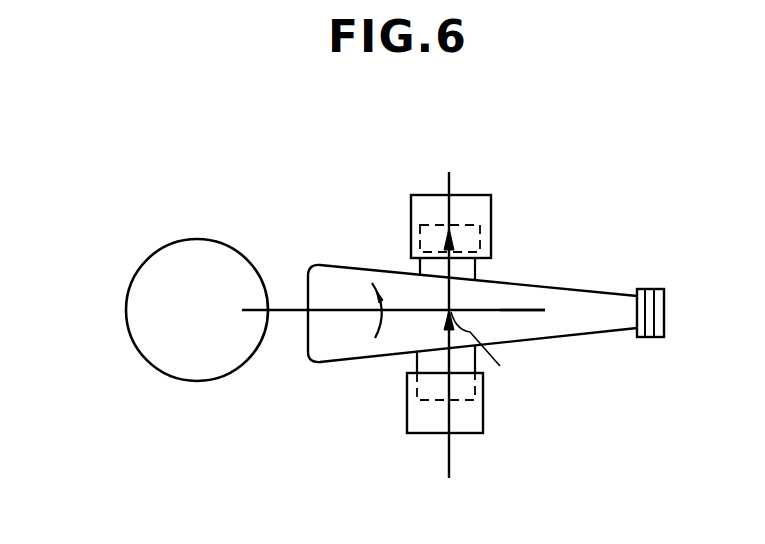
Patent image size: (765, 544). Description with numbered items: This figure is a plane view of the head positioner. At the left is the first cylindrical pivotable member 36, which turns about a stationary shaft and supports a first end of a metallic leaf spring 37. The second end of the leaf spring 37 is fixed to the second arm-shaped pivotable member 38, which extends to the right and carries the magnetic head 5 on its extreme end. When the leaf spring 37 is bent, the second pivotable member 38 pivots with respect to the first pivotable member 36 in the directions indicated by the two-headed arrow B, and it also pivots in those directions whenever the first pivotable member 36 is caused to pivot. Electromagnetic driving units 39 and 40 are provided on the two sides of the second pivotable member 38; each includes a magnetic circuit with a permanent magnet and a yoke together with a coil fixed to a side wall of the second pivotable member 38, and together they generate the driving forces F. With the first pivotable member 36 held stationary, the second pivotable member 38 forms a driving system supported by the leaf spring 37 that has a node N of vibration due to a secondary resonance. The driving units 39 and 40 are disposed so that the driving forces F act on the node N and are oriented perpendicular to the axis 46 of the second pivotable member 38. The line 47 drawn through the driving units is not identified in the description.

The first cylindrical pivotable member 36 is at (131, 284).
The leaf spring 37 is at (270, 312).
The second arm-shaped pivotable member 38 is at (538, 287).
The electromagnetic driving unit 39 is at (463, 433).
The electromagnetic driving unit 40 is at (436, 195).
The axis of the second pivotable member 46 is at (530, 312).
The vertical axis 47 is at (446, 463).
The magnetic head 5 is at (650, 337).
The two-headed arrow B is at (368, 311).
The driving forces F is at (430, 328).
The node of vibration N is at (487, 351).